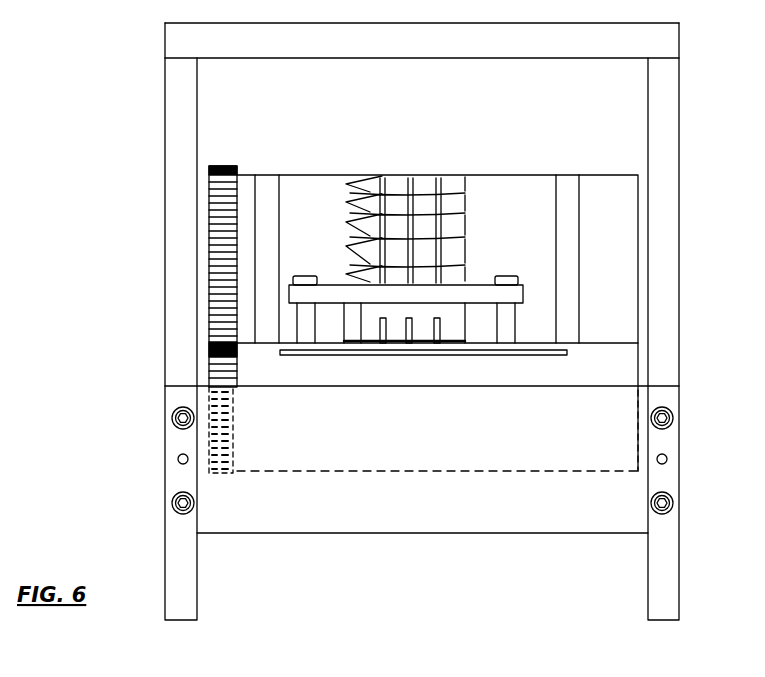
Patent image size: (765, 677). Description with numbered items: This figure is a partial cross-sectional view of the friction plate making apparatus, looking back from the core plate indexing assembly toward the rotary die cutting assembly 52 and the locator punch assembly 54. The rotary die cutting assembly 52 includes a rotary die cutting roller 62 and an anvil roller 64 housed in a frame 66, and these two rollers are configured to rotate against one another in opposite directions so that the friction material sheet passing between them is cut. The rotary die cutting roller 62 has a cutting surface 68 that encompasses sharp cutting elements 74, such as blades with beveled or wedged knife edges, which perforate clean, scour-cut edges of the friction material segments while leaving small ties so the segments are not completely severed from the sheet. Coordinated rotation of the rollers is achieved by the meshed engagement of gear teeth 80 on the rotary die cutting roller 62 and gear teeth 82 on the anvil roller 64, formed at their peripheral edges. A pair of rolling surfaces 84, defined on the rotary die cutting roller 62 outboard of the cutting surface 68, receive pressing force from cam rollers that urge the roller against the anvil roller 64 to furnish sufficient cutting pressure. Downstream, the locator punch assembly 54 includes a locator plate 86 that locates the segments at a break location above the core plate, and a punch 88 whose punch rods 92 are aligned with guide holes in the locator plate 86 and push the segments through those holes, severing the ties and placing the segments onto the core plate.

The rotary die cutting assembly 52 is at (607, 143).
The locator punch assembly 54 is at (483, 363).
The rotary die cutting roller 62 is at (622, 231).
The anvil roller 64 is at (622, 366).
The frame 66 is at (165, 117).
The cutting surface 68 is at (414, 210).
The sharp cutting elements 74 is at (467, 230).
The gear teeth 80 is at (222, 166).
The gear teeth 82 is at (217, 473).
The rolling surfaces 84 is at (267, 178).
The locator plate 86 is at (331, 348).
The punch 88 is at (524, 296).
The punch rods 92 is at (400, 333).